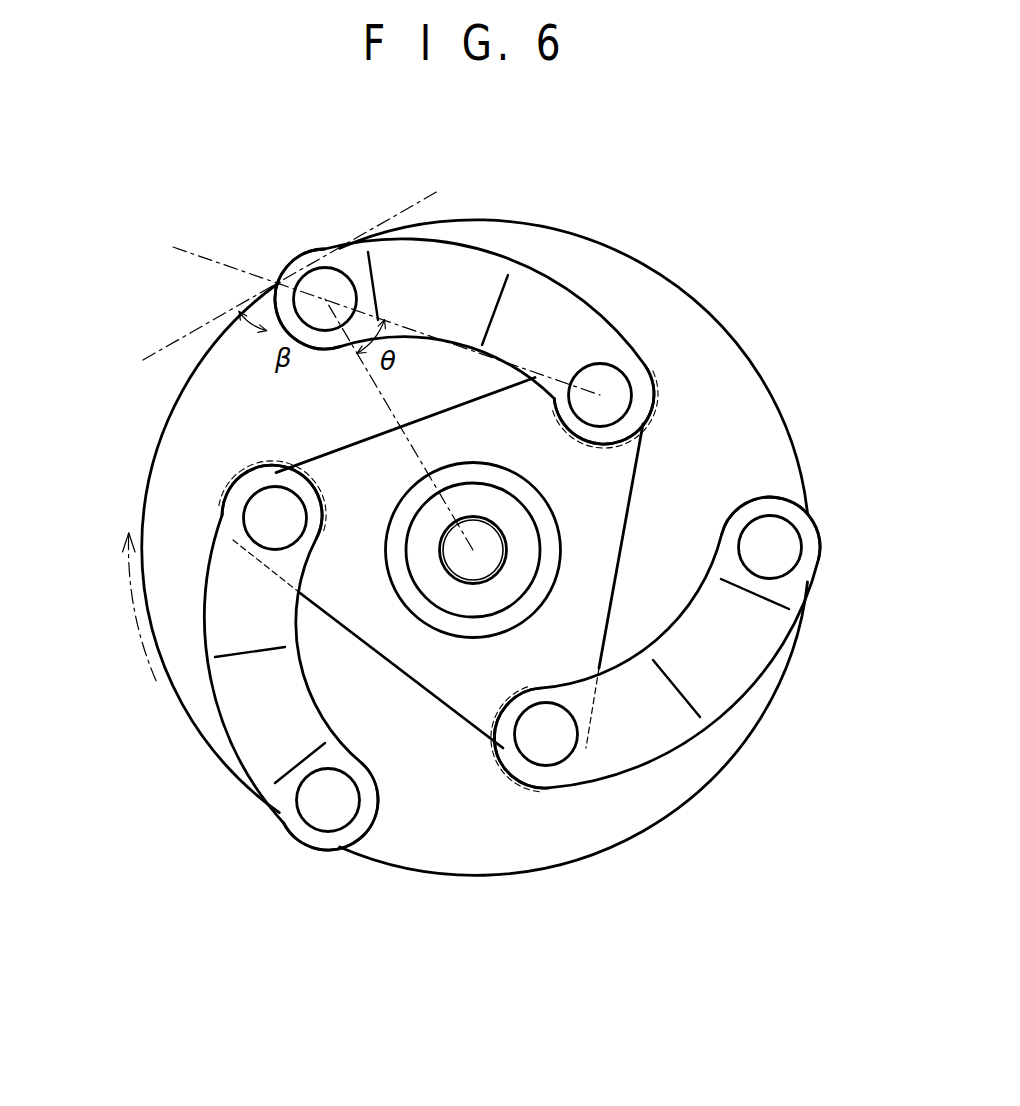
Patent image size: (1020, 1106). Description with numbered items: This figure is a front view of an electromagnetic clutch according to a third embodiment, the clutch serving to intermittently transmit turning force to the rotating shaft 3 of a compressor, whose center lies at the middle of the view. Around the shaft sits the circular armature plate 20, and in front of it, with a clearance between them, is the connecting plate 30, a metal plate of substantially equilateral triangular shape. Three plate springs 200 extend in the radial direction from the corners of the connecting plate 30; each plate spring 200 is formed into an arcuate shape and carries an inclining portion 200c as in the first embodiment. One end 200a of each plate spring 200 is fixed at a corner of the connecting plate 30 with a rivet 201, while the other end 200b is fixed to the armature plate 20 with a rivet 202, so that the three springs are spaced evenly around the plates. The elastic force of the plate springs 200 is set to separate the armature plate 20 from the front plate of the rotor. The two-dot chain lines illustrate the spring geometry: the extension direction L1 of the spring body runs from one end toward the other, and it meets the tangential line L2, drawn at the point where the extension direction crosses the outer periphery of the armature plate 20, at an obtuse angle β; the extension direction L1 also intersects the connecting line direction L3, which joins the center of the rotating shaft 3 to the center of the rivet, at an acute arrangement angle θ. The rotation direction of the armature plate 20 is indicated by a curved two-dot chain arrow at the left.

The rotating shaft 3 is at (493, 555).
The armature plate 20 is at (520, 860).
The connecting plate 30 is at (383, 655).
The plate spring 200 is at (554, 253).
The one end of plate spring 200a is at (640, 363).
The other end of plate spring 200b is at (300, 265).
The inclining portion 200c is at (443, 267).
The rivet 201 is at (620, 403).
The rivet 202 is at (322, 283).
The extension direction L1 is at (203, 240).
The tangential line L2 is at (173, 345).
The connecting line direction L3 is at (380, 392).